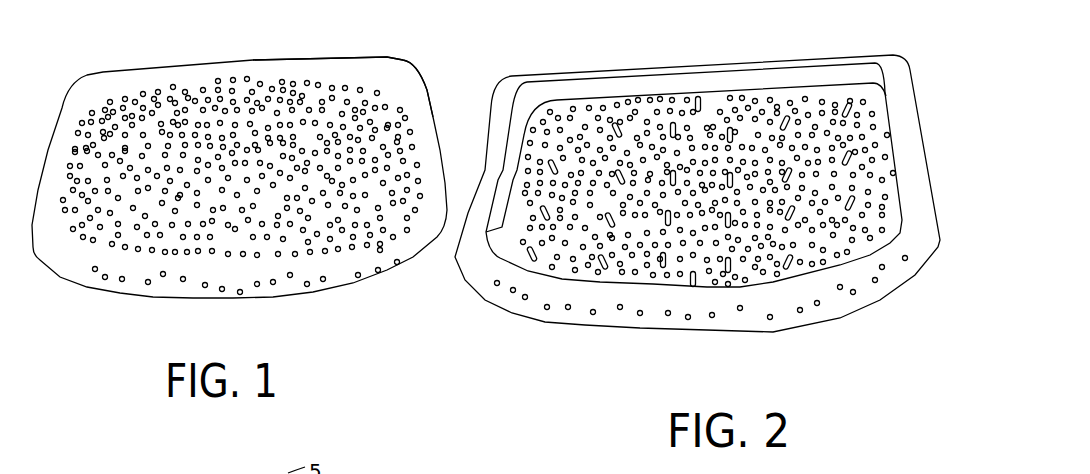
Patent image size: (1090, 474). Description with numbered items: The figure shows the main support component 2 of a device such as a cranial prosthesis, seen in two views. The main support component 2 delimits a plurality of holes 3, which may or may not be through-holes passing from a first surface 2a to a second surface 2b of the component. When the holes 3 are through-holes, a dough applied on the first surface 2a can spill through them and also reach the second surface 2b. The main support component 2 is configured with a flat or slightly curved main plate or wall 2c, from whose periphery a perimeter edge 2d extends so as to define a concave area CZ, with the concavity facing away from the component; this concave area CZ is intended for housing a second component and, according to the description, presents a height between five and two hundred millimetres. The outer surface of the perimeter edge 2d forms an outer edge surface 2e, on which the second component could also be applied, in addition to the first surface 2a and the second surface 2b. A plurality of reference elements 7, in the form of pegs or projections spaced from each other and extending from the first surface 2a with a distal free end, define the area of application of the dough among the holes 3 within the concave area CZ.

In FIG. 1, the main support component 2 is at (228, 278).
In FIG. 2, the main support component 2 is at (712, 316).
In FIG. 2, the first surface 2a is at (633, 253).
In FIG. 1, the second surface 2b is at (333, 273).
In FIG. 1, the main plate or wall 2c is at (360, 107).
In FIG. 2, the main plate or wall 2c is at (523, 163).
In FIG. 2, the perimeter edge 2d is at (541, 283).
In FIG. 2, the outer edge surface 2e is at (763, 297).
In FIG. 1, the holes 3 is at (277, 113).
In FIG. 2, the holes 3 is at (822, 100).
In FIG. 2, the reference elements 7 is at (698, 97).
In FIG. 2, the concave area CZ is at (824, 172).